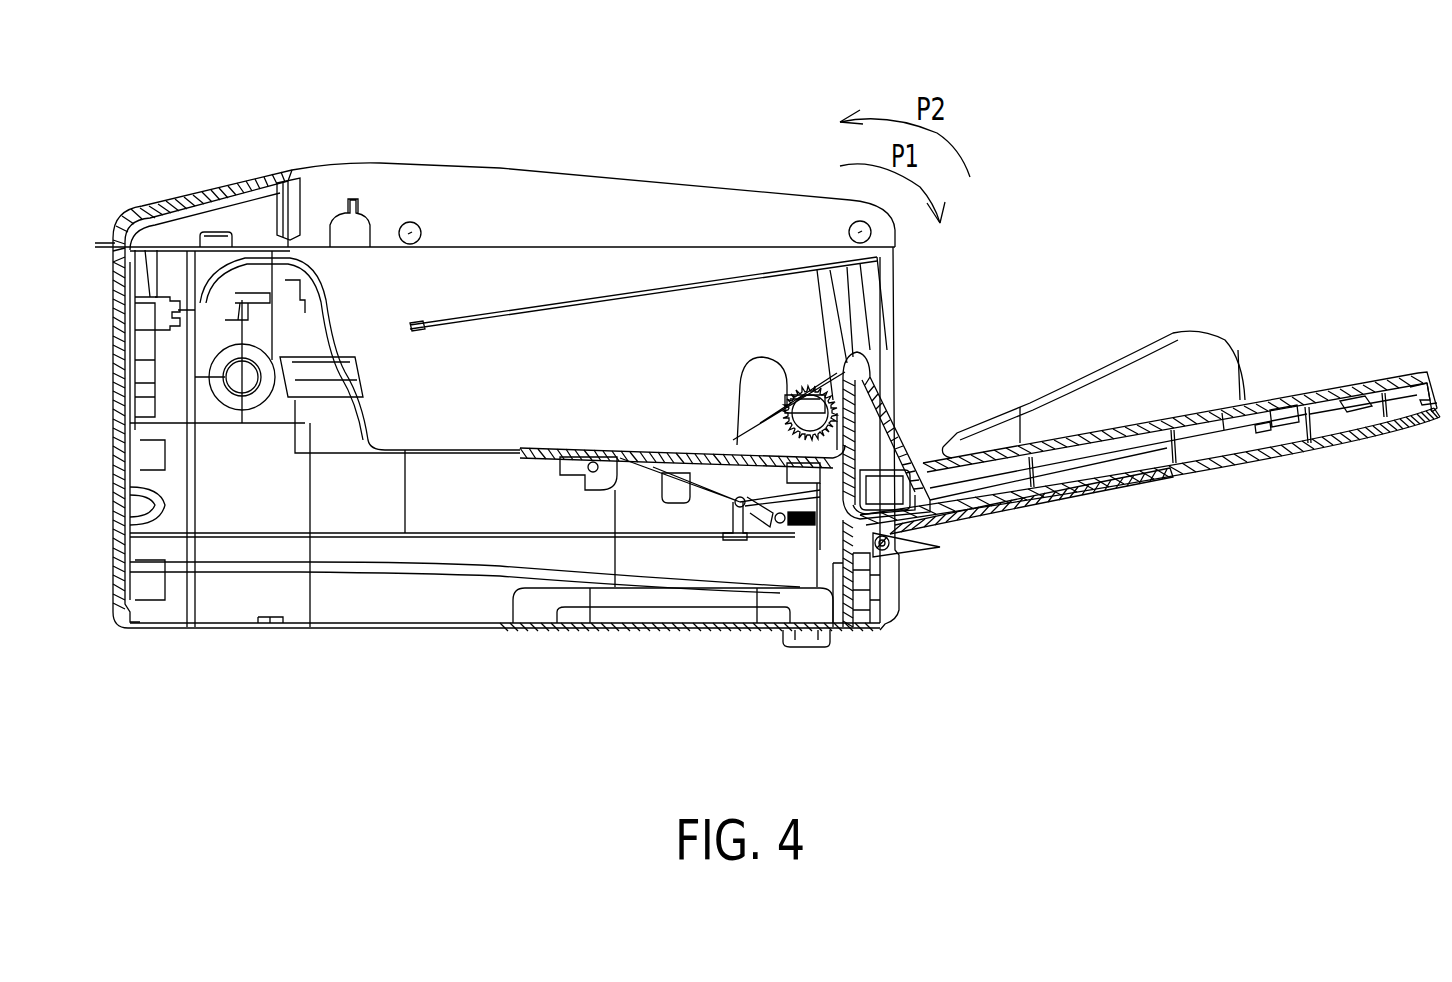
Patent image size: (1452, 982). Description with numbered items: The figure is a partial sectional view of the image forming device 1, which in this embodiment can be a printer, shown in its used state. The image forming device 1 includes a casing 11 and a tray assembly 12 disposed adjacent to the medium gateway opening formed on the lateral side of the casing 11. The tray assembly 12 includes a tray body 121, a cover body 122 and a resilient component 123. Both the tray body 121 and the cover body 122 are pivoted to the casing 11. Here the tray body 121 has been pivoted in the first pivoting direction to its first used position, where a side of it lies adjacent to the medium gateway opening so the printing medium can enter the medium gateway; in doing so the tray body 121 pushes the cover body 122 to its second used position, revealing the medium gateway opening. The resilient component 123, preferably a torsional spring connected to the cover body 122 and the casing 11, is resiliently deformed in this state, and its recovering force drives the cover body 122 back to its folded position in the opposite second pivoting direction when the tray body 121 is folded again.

The image forming device 1 is at (1033, 85).
The casing 11 is at (672, 632).
The tray assembly 12 is at (1083, 612).
The tray body 121 is at (1217, 470).
The cover body 122 is at (1100, 500).
The resilient component 123 is at (903, 555).